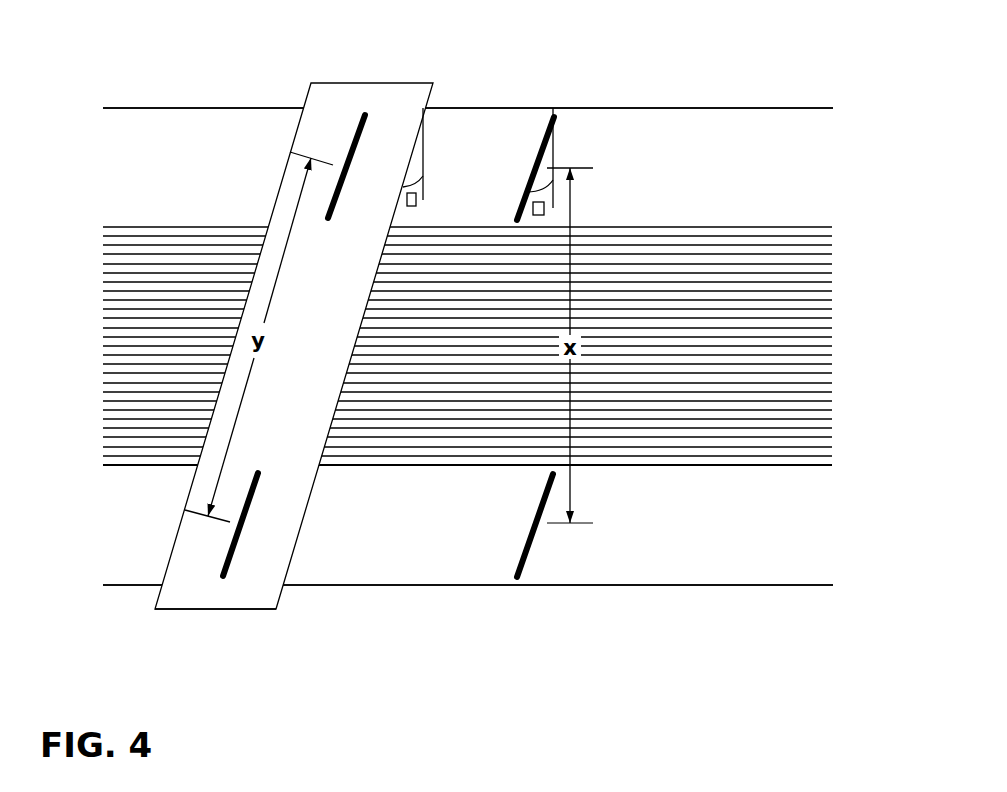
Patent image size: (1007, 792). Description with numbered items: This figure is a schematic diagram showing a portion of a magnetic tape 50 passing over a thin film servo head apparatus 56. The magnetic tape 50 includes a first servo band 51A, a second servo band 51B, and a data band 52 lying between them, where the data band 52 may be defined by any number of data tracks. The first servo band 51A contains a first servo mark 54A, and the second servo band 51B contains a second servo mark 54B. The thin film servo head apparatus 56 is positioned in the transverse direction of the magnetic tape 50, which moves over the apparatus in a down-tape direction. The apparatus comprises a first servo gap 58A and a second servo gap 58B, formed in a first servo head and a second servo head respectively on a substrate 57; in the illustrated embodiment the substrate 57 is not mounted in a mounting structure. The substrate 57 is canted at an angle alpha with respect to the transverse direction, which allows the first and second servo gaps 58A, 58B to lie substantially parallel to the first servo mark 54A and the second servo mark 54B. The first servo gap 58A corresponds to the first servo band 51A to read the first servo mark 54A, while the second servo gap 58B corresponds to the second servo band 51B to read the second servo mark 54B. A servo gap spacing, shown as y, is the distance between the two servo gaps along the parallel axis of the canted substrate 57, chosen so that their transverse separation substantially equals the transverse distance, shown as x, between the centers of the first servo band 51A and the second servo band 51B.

The magnetic tape 50 is at (693, 115).
The first servo band 51A is at (852, 167).
The second servo band 51B is at (850, 526).
The data band 52 is at (850, 337).
The first servo mark 54A is at (535, 150).
The second servo mark 54B is at (515, 545).
The thin film servo head apparatus 56 is at (397, 83).
The substrate 57 is at (207, 600).
The first servo gap 58A is at (353, 133).
The second servo gap 58B is at (237, 562).